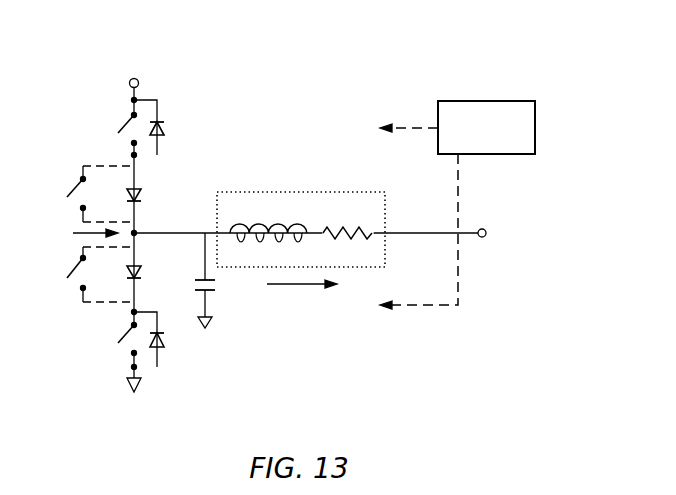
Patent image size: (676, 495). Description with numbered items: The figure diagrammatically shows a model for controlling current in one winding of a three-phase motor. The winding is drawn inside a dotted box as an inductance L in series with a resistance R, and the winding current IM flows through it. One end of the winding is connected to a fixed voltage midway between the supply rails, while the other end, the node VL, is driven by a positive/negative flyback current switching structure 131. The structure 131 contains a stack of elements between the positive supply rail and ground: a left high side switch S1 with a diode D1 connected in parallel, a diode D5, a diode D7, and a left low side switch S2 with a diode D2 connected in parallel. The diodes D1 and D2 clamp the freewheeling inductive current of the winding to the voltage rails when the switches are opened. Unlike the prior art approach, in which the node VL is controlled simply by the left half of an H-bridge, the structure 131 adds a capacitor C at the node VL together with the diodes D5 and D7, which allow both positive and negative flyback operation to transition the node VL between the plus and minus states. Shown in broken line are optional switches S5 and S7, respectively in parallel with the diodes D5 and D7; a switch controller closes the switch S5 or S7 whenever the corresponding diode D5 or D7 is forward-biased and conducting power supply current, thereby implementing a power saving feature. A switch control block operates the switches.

The positive/negative flyback current switching structure 131 is at (287, 241).
The left high side switch S1 is at (113, 129).
The diode D1 is at (171, 128).
The switch S5 is at (86, 194).
The diode D5 is at (147, 195).
The switch S7 is at (86, 274).
The diode D7 is at (147, 272).
The left low side switch S2 is at (112, 339).
The diode D2 is at (171, 340).
The capacitor C is at (213, 280).
The inductance L is at (268, 223).
The resistance R is at (348, 222).
The VL node VL is at (84, 233).
The winding current IM is at (302, 295).